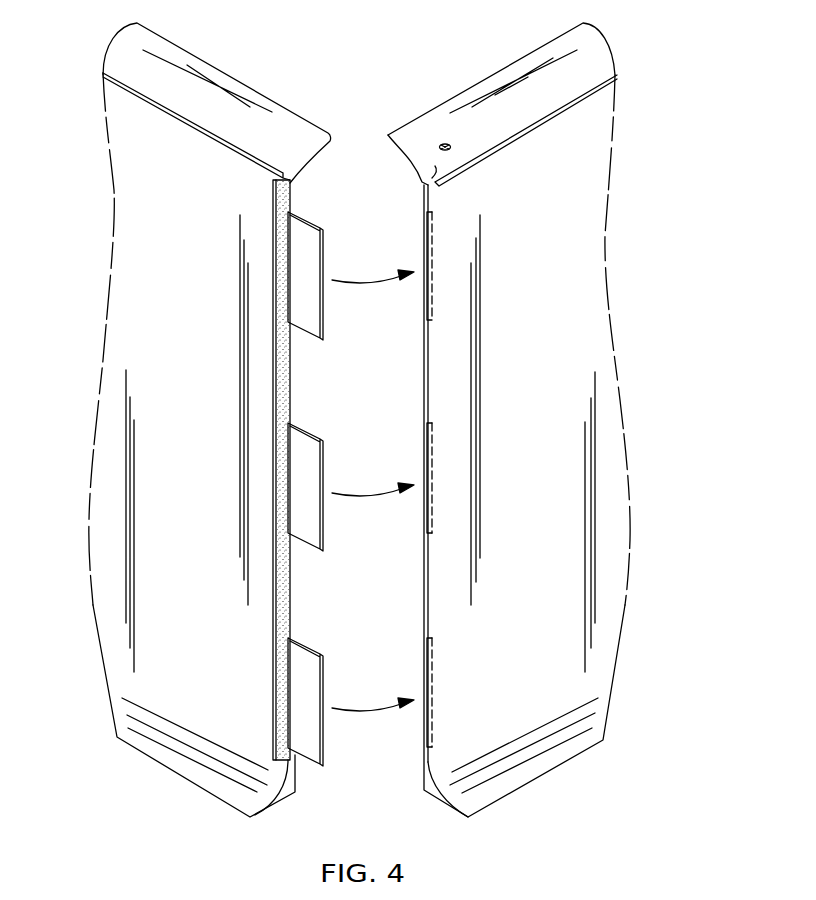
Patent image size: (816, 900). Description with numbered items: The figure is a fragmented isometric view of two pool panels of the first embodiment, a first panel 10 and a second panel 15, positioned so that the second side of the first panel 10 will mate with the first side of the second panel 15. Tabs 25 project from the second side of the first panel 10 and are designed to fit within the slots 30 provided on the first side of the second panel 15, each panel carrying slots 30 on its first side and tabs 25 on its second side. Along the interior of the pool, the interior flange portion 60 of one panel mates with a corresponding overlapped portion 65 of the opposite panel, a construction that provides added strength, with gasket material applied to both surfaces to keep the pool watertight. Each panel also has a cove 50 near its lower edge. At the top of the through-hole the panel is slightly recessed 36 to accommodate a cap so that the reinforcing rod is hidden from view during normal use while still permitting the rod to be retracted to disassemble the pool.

The first panel 10 is at (138, 216).
The second panel 15 is at (582, 226).
The tabs 25 is at (295, 425).
The slots 30 is at (432, 262).
The recess 36 is at (445, 144).
The cove 50 is at (203, 755).
The interior flange portion 60 is at (422, 182).
The overlapped portion 65 is at (283, 372).